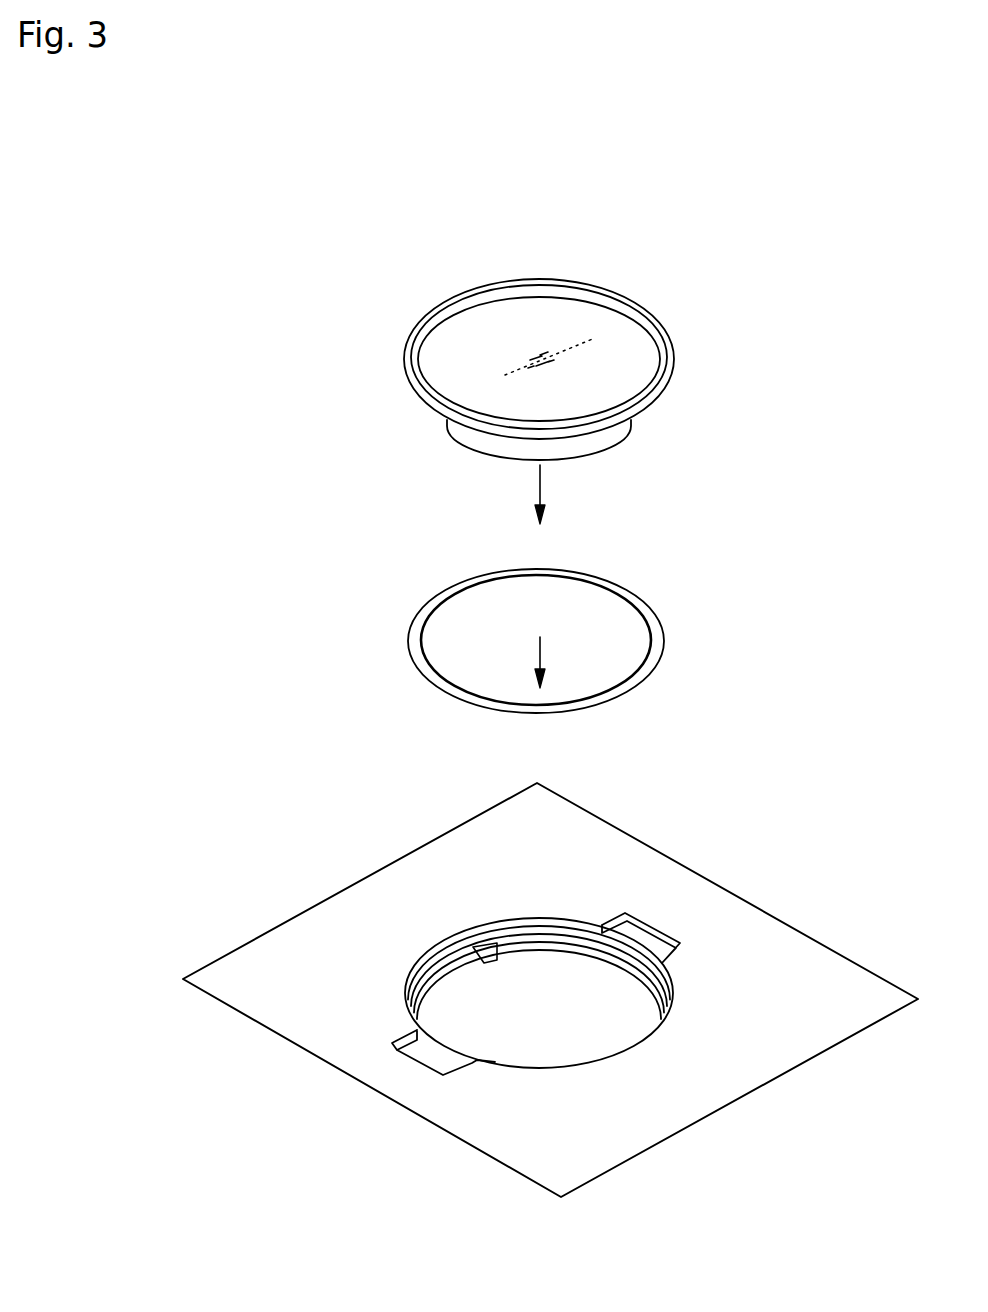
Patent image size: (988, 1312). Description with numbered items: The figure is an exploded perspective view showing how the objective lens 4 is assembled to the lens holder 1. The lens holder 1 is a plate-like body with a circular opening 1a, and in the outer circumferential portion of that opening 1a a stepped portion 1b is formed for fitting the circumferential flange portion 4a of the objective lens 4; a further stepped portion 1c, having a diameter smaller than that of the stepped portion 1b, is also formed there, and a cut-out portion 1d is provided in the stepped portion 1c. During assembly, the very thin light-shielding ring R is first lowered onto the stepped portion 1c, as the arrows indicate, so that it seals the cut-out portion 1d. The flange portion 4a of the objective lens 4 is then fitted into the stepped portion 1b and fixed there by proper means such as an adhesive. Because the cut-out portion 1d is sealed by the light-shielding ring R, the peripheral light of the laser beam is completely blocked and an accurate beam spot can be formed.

The objective lens 4 is at (615, 328).
The circumferential flange portion 4a is at (672, 355).
The light-shielding ring R is at (643, 670).
The lens holder 1 is at (768, 932).
The opening 1a is at (555, 1050).
The stepped portion 1b is at (530, 933).
The stepped portion 1c is at (497, 950).
The cut-out portion 1d is at (452, 972).